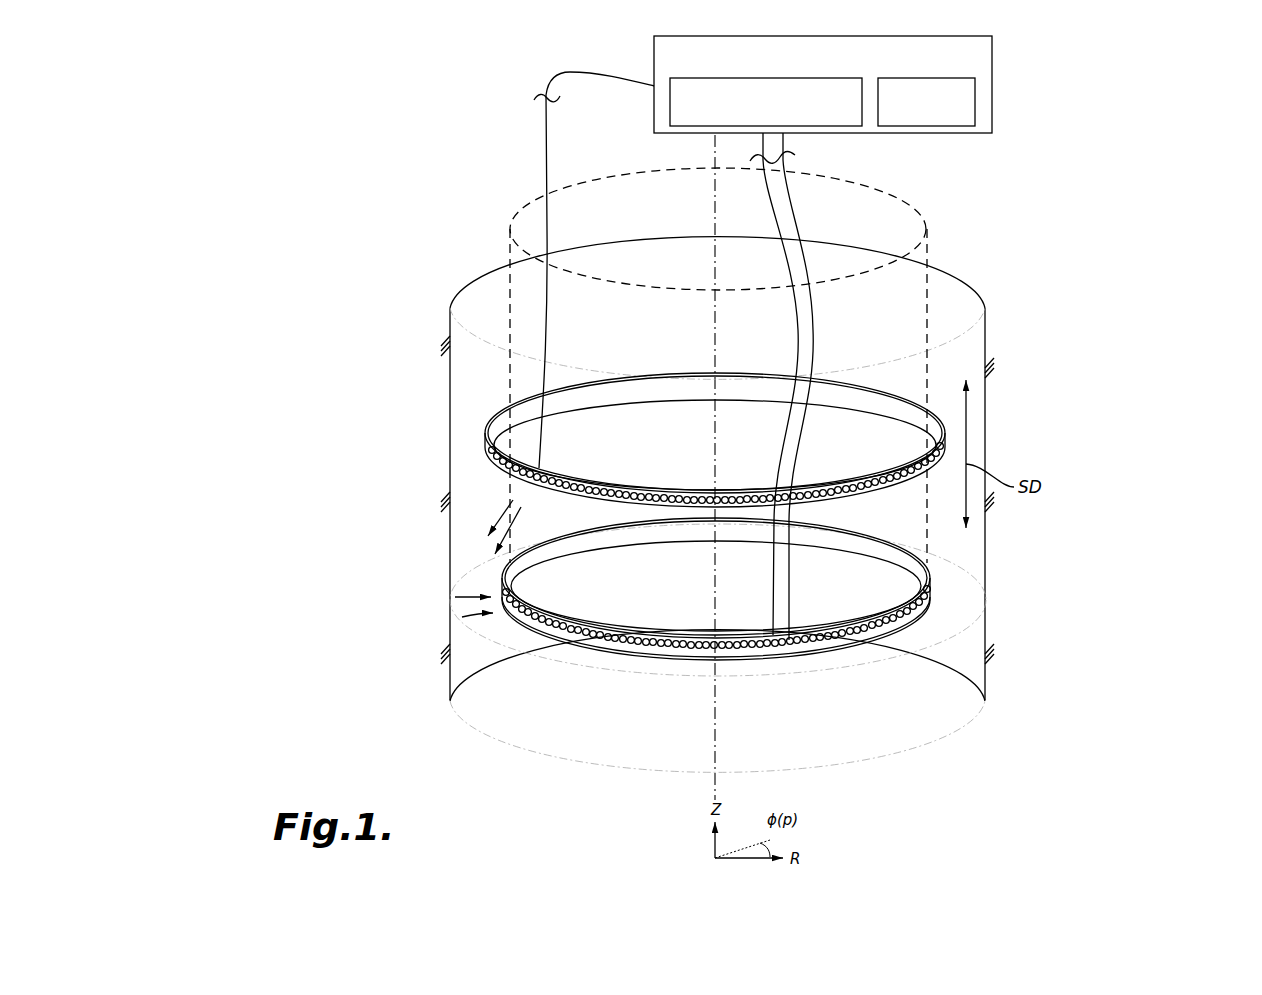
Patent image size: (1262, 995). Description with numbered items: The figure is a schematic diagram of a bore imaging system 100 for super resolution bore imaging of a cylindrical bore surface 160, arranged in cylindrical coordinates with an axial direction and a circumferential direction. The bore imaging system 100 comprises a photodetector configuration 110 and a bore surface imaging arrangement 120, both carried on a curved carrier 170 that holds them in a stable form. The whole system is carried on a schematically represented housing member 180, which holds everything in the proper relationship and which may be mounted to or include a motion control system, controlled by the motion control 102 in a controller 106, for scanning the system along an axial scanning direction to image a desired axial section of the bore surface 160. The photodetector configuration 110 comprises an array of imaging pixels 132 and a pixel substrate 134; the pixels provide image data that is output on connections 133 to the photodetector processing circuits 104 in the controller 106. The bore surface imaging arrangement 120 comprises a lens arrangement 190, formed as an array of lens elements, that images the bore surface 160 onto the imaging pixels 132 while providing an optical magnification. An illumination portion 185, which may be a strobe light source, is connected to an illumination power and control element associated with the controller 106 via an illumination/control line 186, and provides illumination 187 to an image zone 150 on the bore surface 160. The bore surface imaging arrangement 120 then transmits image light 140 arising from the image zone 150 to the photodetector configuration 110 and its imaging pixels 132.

The bore imaging system 100 is at (1162, 118).
The motion control 102 is at (975, 100).
The photodetector processing circuits 104 is at (822, 127).
The controller 106 is at (993, 50).
The photodetector configuration 110 is at (1184, 655).
The bore surface imaging arrangement 120 is at (1181, 593).
The imaging pixels 132 is at (835, 648).
The connections 133 is at (800, 640).
The pixel substrate 134 is at (838, 644).
The image light 140 is at (482, 628).
The image zone 150 is at (445, 597).
The bore surface 160 is at (456, 443).
The curved carrier 170 is at (918, 573).
The housing member 180 is at (893, 198).
The illumination portion 185 is at (492, 459).
The illumination/control line 186 is at (545, 147).
The illumination 187 is at (489, 511).
The lens arrangement 190 is at (863, 641).